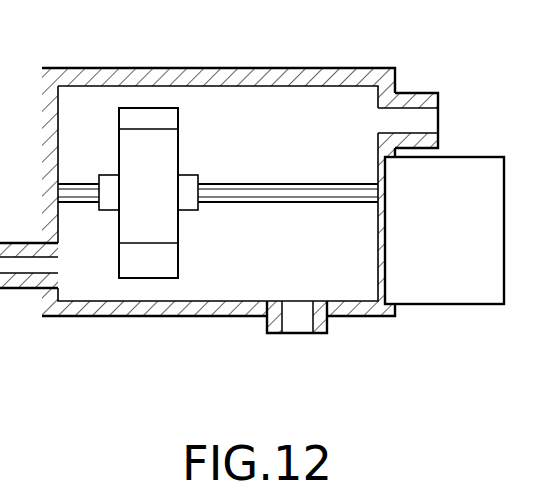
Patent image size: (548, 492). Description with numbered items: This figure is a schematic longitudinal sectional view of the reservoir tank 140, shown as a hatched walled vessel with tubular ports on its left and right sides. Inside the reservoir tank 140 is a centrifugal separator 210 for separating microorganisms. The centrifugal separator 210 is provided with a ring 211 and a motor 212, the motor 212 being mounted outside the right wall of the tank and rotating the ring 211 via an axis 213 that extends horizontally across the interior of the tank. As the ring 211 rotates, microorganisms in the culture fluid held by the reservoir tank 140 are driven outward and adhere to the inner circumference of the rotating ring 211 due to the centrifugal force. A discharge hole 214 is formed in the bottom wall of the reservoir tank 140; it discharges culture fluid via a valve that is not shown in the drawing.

The reservoir tank 140 is at (375, 322).
The centrifugal separator 210 is at (114, 284).
The ring 211 is at (145, 116).
The motor 212 is at (467, 168).
The axis 213 is at (265, 194).
The discharge hole 214 is at (297, 322).